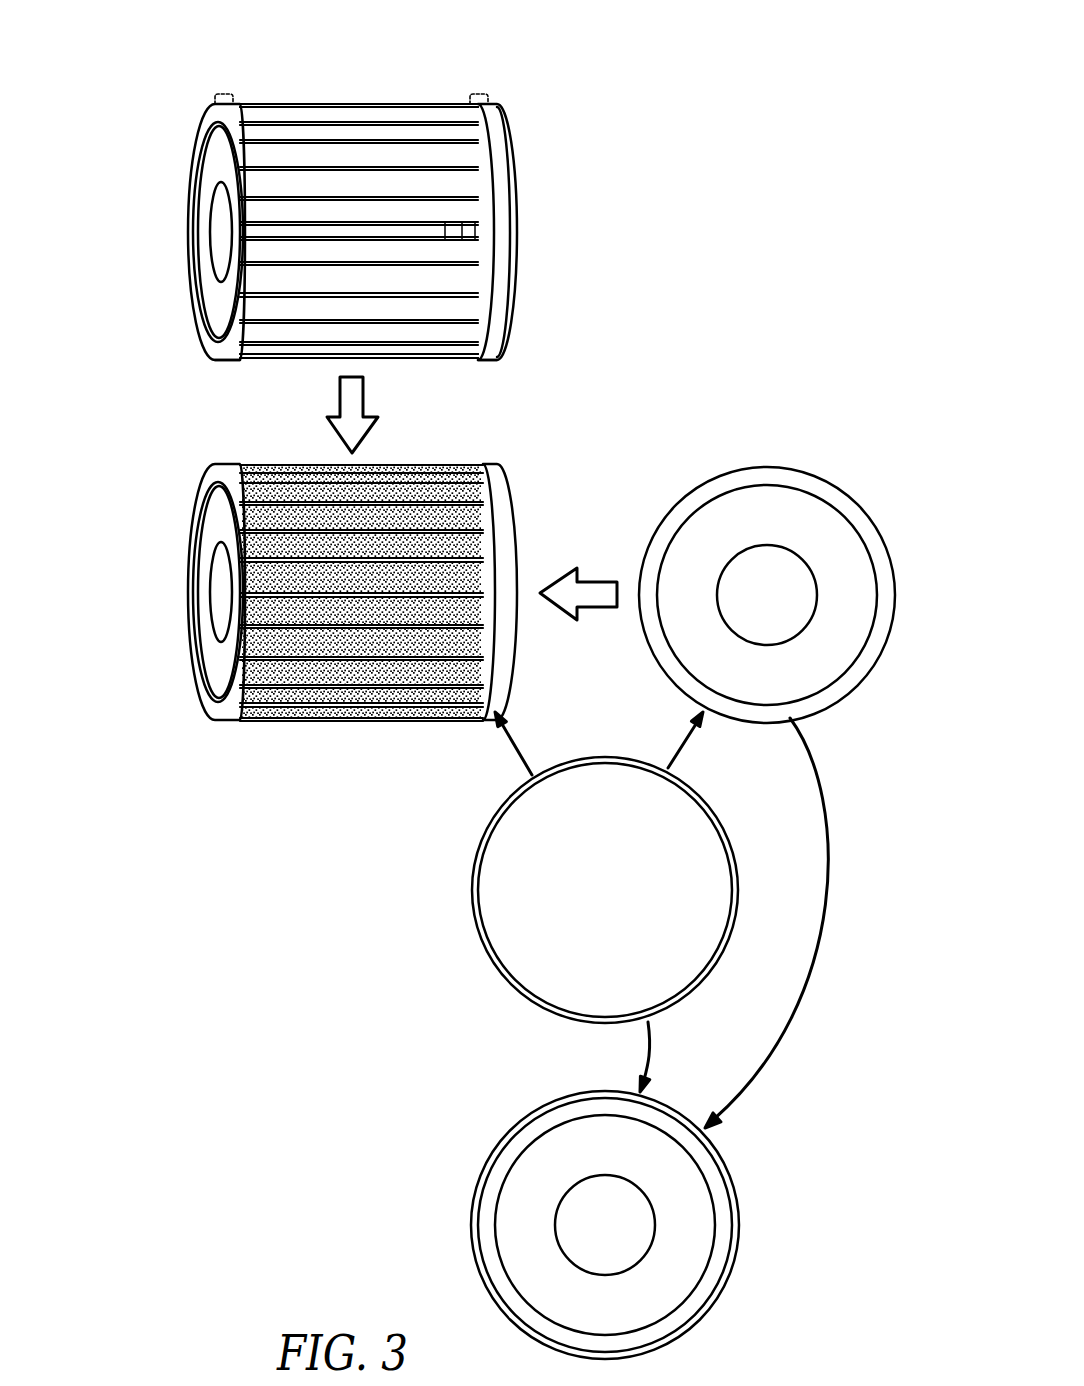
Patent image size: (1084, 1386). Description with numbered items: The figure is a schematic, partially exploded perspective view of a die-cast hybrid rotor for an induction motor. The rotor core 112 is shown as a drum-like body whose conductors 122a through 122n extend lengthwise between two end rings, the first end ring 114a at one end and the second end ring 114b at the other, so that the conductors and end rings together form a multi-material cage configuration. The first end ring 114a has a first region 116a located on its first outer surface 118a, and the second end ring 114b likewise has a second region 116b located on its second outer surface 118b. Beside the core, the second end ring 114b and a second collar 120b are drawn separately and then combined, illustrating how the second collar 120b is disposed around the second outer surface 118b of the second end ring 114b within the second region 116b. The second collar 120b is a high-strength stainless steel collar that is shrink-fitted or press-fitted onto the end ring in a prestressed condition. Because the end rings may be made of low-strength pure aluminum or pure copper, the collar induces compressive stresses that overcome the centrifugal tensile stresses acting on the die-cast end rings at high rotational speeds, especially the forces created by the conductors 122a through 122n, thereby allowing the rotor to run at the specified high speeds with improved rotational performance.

The rotor core 112 is at (270, 56).
The first end ring 114a is at (208, 119).
The second end ring 114b is at (512, 118).
The first region 116a is at (225, 93).
The second region 116b is at (480, 93).
The first outer surface 118a is at (222, 376).
The second outer surface 118b is at (487, 376).
The second collar 120b is at (471, 848).
The conductor 122a is at (373, 103).
The conductor 122n is at (408, 362).